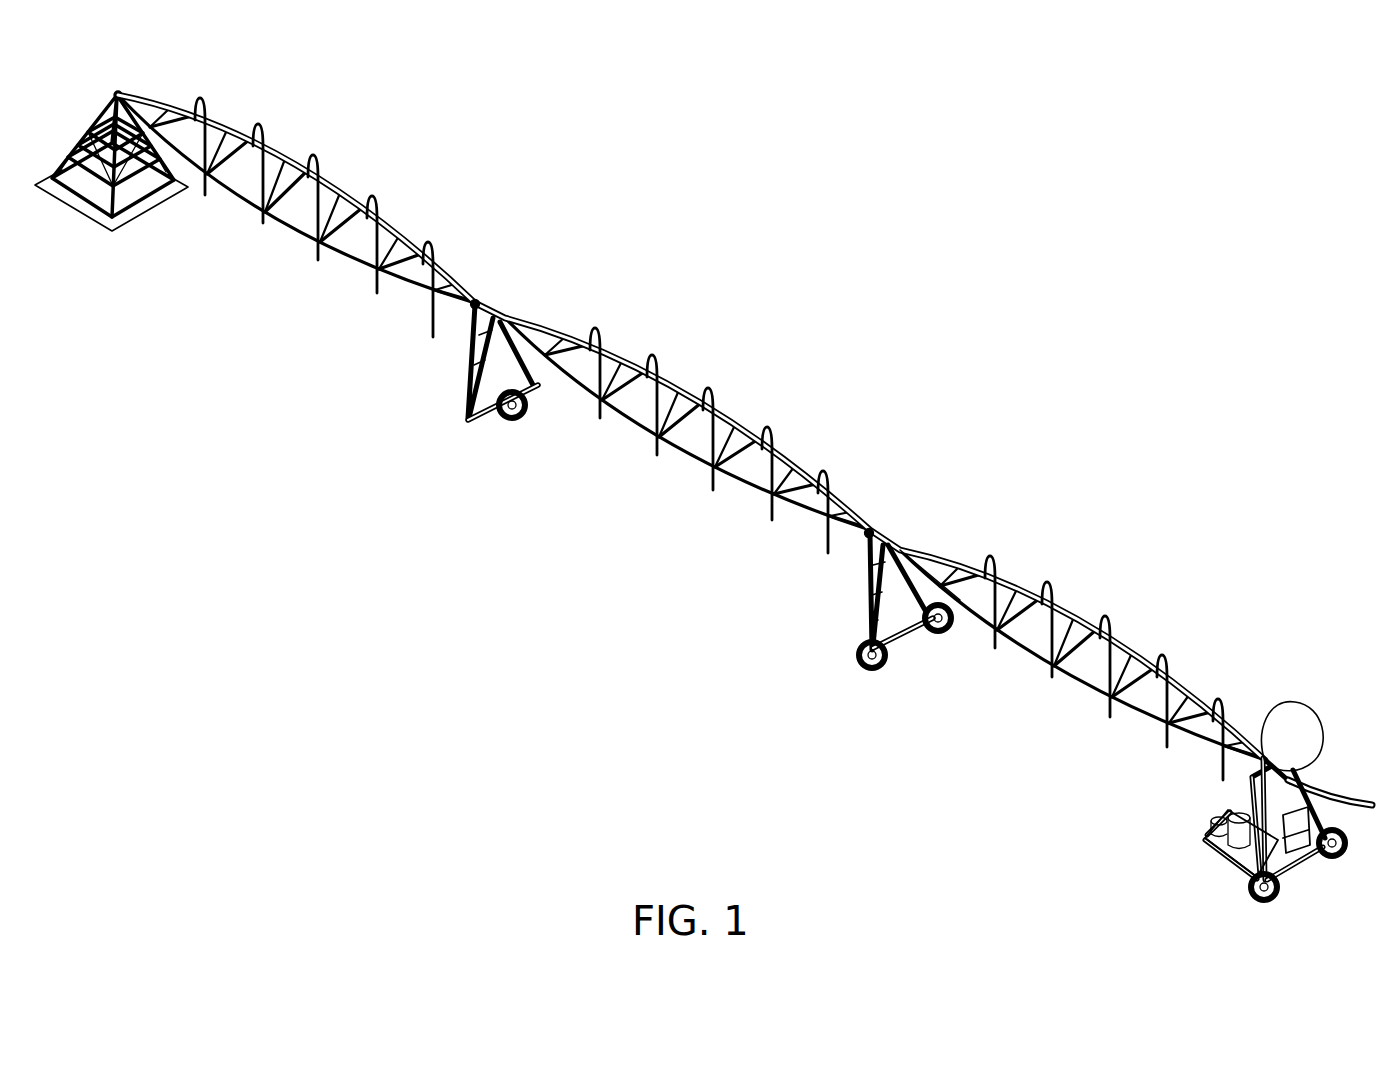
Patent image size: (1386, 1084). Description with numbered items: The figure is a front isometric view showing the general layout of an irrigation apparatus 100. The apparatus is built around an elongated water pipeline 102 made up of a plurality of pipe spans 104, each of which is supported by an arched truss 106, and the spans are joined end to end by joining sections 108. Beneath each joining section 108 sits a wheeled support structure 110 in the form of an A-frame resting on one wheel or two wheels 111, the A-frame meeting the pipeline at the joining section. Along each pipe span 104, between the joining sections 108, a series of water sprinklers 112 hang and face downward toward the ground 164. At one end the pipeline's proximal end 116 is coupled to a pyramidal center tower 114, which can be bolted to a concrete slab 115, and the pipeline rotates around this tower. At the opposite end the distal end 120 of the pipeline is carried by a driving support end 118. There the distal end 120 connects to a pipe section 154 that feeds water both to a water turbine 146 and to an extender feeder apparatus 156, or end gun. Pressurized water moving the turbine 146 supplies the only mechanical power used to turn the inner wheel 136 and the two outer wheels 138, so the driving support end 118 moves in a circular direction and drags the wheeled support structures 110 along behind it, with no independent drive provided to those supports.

The irrigation apparatus 100 is at (700, 504).
The elongated water pipeline 102 is at (691, 456).
The pipe spans 104 is at (343, 190).
The arched trusses 106 is at (342, 262).
The joining sections 108 is at (478, 304).
The wheeled support structure 110 is at (705, 515).
The wheel 111 is at (518, 428).
The water sprinklers 112 is at (260, 222).
The center tower 114 is at (80, 148).
The concrete slab 115 is at (128, 232).
The proximal end 116 is at (123, 92).
The driving support end 118 is at (1257, 808).
The distal end 120 is at (1268, 770).
The inner wheel 136 is at (1212, 818).
The outer wheels 138 is at (1276, 891).
The water turbine 146 is at (1238, 848).
The pipe section 154 is at (1303, 705).
The extender feeder apparatus 156 is at (1313, 786).
The ground 164 is at (560, 551).